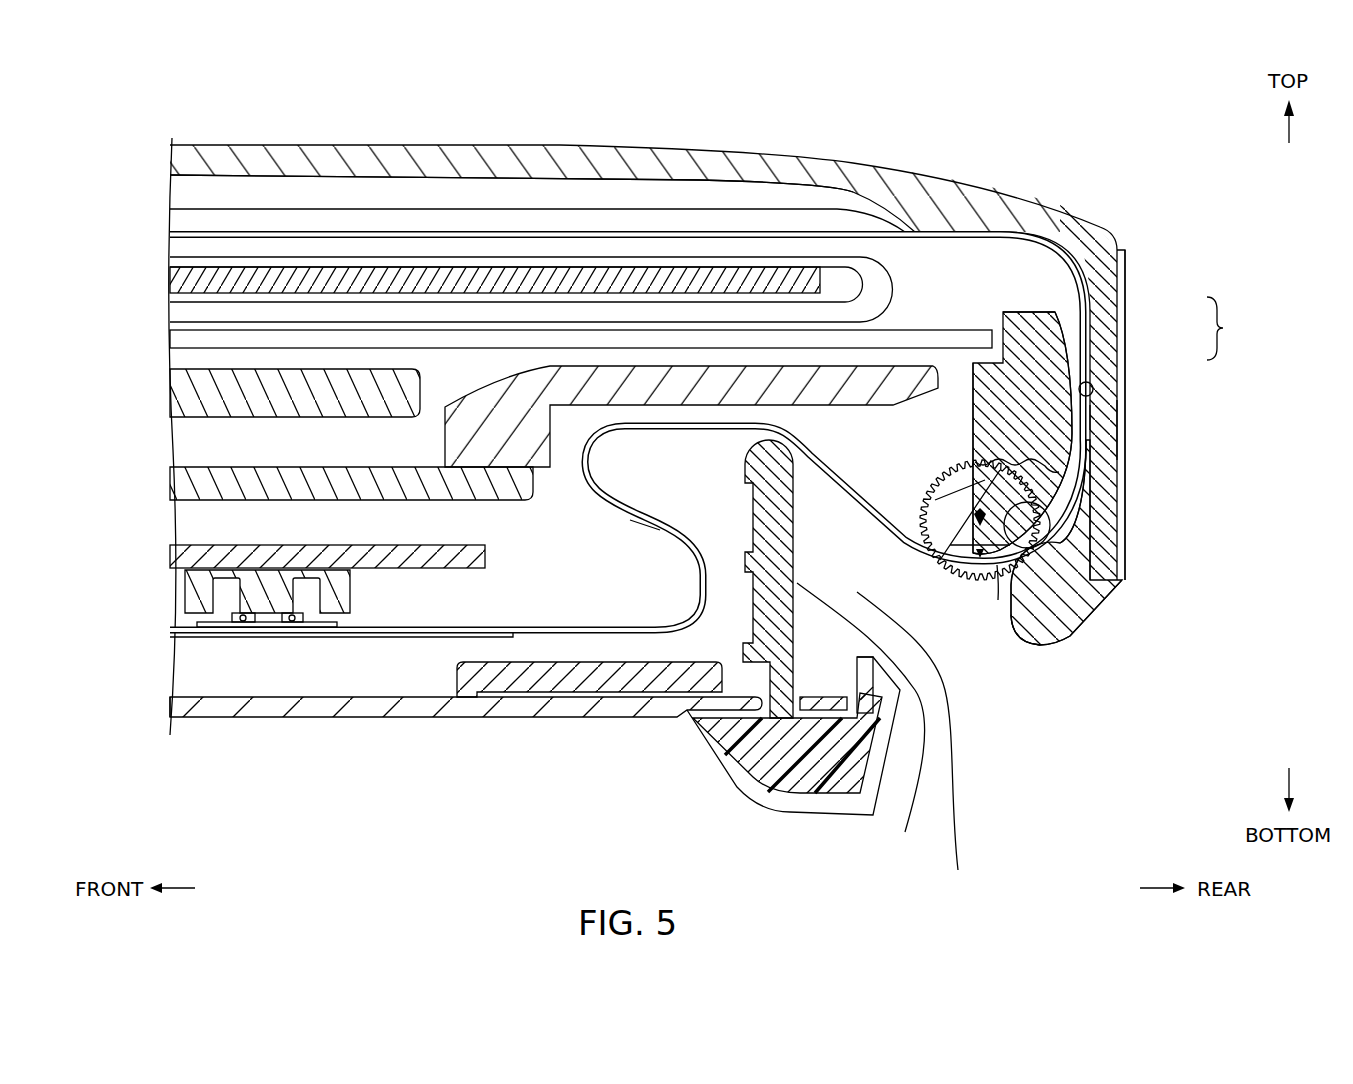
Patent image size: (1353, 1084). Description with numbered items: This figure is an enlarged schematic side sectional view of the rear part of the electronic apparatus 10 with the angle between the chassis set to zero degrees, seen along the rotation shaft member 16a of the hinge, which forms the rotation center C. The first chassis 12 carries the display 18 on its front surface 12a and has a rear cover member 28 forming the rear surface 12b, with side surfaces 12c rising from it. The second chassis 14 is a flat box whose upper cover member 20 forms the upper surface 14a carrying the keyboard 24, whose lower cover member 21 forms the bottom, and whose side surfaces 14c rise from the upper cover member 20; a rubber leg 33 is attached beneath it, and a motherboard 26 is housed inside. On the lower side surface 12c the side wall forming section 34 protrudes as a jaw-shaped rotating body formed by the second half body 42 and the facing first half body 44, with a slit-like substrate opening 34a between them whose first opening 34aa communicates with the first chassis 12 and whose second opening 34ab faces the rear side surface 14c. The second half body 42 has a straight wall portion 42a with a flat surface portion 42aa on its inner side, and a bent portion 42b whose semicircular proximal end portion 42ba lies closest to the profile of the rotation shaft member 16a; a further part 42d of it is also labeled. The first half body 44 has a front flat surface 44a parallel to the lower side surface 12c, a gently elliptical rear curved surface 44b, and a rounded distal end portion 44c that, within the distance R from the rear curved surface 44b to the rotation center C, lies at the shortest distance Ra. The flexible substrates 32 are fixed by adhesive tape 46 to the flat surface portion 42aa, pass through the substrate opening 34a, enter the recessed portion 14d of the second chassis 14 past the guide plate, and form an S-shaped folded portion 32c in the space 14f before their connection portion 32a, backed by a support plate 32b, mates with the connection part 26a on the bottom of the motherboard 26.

The electronic apparatus 10 is at (1150, 165).
The first chassis 12 is at (838, 122).
The front surface 12a is at (493, 348).
The rear surface 12b is at (475, 144).
The side surface 12c is at (1126, 262).
The second chassis 14 is at (386, 776).
The upper surface 14a is at (738, 363).
The side surface 14c is at (842, 650).
The recessed portion 14d is at (983, 900).
The space 14f is at (620, 590).
The rotation shaft member 16a is at (933, 490).
The display 18 is at (560, 275).
The upper cover member 20 is at (610, 380).
The lower cover member 21 is at (445, 703).
The keyboard 24 is at (318, 361).
The motherboard 26 is at (200, 545).
The connection part 26a is at (185, 592).
The rear cover member 28 is at (283, 162).
The flexible substrates 32 is at (705, 420).
The connection portion 32a is at (245, 606).
The support plate 32b is at (330, 637).
The folded portion 32c is at (565, 597).
The rubber leg 33 is at (777, 767).
The side wall forming section 34 is at (1233, 328).
The substrate opening 34a is at (1062, 498).
The first opening 34aa is at (1063, 310).
The second opening 34ab is at (998, 600).
The second half body 42 is at (1103, 340).
The wall portion 42a is at (1100, 432).
The flat surface portion 42aa is at (1093, 389).
The bent portion 42b is at (1082, 594).
The semicircular proximal end portion 42ba is at (1088, 542).
The holder bottom surface 42d is at (1018, 648).
The first half body 44 is at (1045, 345).
The front flat surface 44a is at (973, 420).
The rear curved surface 44b is at (1090, 362).
The distal end portion 44c is at (985, 578).
The adhesive tape 46 is at (1092, 418).
The rotation center C is at (978, 521).
The distance R is at (1030, 522).
The shortest distance Ra is at (978, 553).